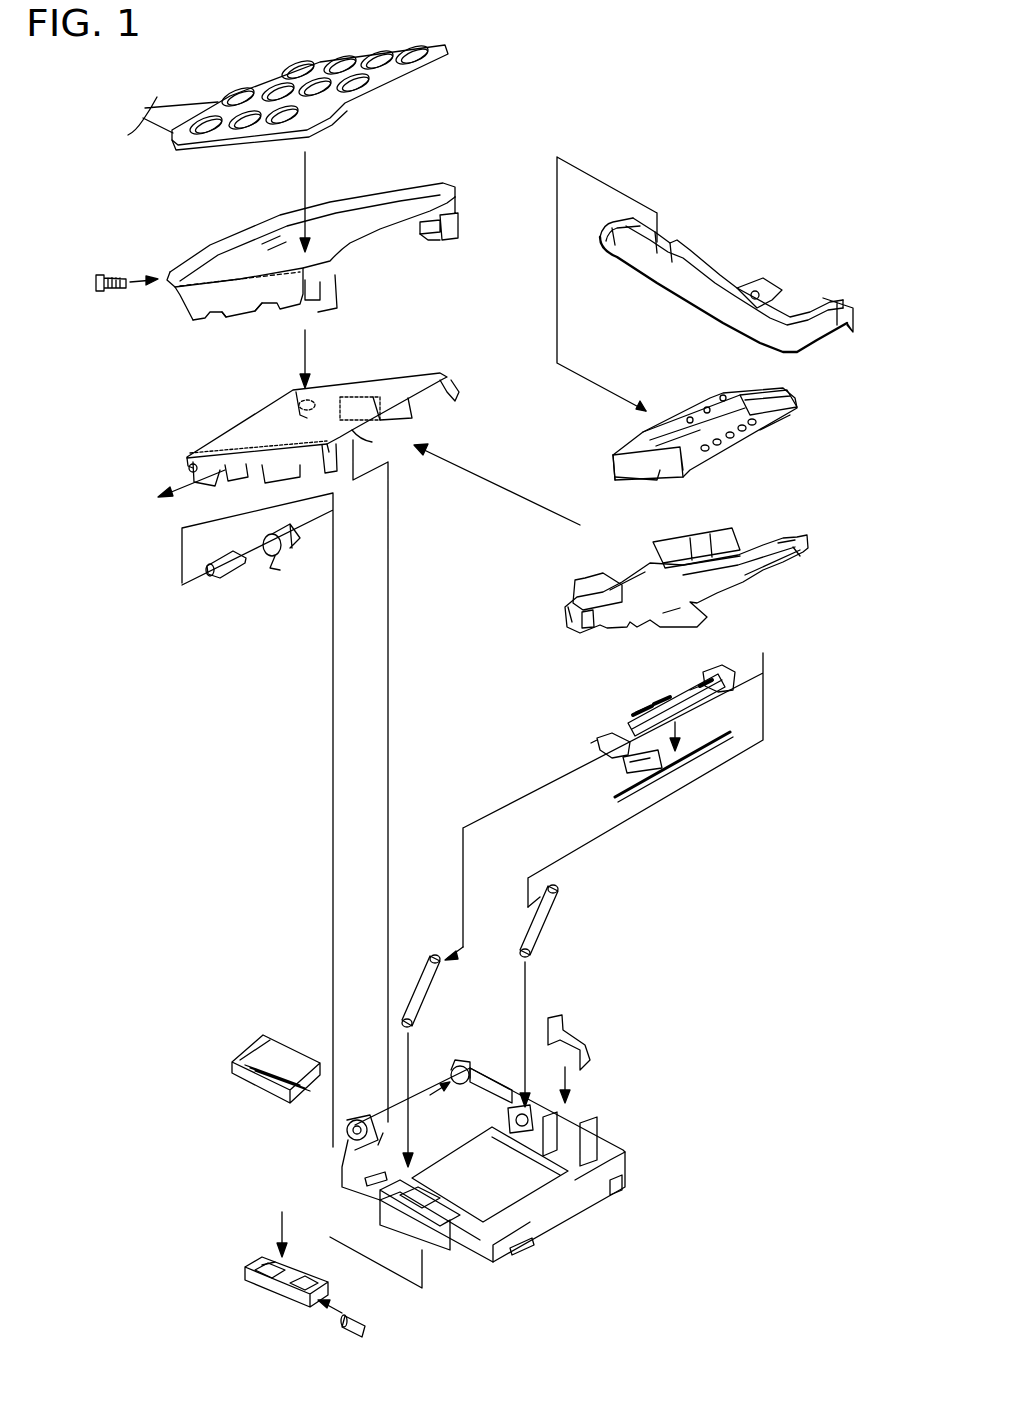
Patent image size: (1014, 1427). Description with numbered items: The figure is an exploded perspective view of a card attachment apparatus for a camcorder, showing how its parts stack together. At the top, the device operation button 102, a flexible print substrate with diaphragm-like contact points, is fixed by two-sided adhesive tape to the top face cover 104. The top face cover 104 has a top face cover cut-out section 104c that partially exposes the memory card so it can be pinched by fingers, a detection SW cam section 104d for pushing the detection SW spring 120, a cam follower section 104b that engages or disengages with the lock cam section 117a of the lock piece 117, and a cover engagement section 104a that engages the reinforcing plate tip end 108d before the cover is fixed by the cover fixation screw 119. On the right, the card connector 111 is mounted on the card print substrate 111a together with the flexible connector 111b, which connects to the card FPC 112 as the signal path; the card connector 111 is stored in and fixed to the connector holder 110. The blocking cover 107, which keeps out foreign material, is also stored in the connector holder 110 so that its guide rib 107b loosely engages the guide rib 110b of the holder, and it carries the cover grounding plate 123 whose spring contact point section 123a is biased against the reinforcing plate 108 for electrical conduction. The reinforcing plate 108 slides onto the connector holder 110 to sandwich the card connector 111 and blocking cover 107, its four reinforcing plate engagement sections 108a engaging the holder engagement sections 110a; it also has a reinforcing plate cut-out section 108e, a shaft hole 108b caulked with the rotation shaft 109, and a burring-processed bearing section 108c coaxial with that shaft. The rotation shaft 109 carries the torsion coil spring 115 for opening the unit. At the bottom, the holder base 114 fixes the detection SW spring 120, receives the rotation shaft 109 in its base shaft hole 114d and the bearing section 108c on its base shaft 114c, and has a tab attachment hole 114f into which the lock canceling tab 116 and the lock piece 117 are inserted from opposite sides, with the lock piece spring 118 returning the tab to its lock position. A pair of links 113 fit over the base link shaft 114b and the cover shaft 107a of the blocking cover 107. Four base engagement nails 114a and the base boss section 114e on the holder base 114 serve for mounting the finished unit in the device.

The device operation button 102 is at (403, 62).
The top face cover 104 is at (360, 212).
The cover engagement section 104a is at (452, 218).
The cam follower section 104b is at (290, 310).
The top face cover cut-out section 104c is at (372, 235).
The detection SW cam section 104d is at (427, 238).
The blocking cover 107 is at (627, 715).
The cover shaft 107a is at (723, 673).
The guide rib 107b is at (700, 702).
The reinforcing plate 108 is at (350, 397).
The reinforcing plate engagement section 108a is at (453, 380).
The shaft hole 108b is at (187, 468).
The bearing section 108c is at (300, 390).
The reinforcing plate tip end 108d is at (443, 372).
The reinforcing plate cut-out section 108e is at (397, 420).
The rotation shaft 109 is at (227, 555).
The connector holder 110 is at (668, 588).
The holder engagement section 110a is at (800, 533).
The guide rib 110b is at (778, 543).
The card connector 111 is at (675, 430).
The card print substrate 111a is at (773, 427).
The flexible connector 111b is at (643, 433).
The card FPC 112 is at (700, 268).
The link 113 is at (415, 985).
The holder base 114 is at (607, 1135).
The base engagement nail 114a is at (370, 1190).
The base link shaft 114b is at (507, 1120).
The base shaft 114c is at (450, 1063).
The base shaft hole 114d is at (347, 1127).
The base boss section 114e is at (387, 1133).
The tab attachment hole 114f is at (413, 1220).
The torsion coil spring 115 is at (287, 537).
The lock canceling tab 116 is at (252, 1047).
The lock piece 117 is at (258, 1292).
The lock cam section 117a is at (282, 1253).
The lock piece spring 118 is at (370, 1332).
The cover fixation screw 119 is at (100, 292).
The detection SW spring 120 is at (560, 1043).
The cover grounding plate 123 is at (667, 767).
The spring contact point section 123a is at (613, 768).